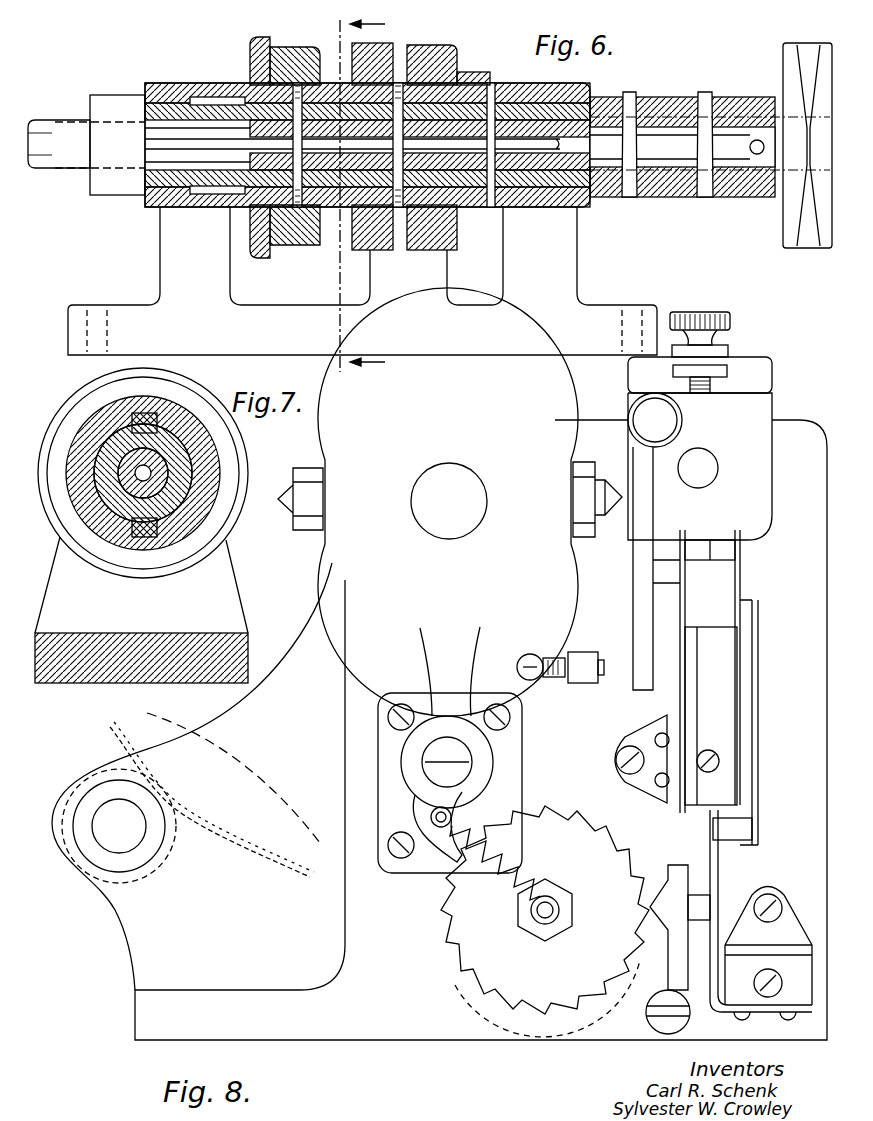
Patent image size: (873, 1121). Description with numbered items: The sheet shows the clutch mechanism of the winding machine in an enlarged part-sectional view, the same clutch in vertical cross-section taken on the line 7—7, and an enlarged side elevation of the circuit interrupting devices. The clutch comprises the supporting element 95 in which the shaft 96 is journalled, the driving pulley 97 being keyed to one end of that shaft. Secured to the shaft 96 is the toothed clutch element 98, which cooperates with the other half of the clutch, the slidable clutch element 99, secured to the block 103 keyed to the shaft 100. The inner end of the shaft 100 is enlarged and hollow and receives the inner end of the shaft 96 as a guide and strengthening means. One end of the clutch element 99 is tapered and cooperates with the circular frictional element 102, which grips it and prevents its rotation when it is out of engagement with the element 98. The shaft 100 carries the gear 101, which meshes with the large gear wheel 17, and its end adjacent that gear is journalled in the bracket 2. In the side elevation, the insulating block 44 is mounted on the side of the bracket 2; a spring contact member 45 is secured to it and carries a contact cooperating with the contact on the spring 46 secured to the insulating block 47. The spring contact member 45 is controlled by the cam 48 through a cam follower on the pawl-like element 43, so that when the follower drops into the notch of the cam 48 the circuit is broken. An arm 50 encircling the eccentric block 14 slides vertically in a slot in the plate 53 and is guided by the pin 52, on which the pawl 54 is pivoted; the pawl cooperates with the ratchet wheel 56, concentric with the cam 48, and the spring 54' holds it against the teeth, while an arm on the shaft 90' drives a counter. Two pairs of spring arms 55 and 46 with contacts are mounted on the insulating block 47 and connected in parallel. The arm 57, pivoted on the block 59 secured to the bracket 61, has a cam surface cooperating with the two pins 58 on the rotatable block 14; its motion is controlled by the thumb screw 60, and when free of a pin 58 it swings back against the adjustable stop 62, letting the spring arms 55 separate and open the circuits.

In FIG. 8, the bracket 2 is at (373, 1015).
In FIG. 6, the section line 7— 7 is at (348, 201).
In FIG. 8, the block 14 is at (448, 502).
In FIG. 8, the large gear wheel 17 is at (116, 733).
In FIG. 8, the pawl 43 is at (676, 974).
In FIG. 8, the insulating block 44 is at (809, 957).
In FIG. 8, the spring contact member 45 is at (716, 865).
In FIG. 8, the spring 46 is at (762, 781).
In FIG. 8, the insulating block 47 is at (728, 772).
In FIG. 8, the cam 48 is at (488, 999).
In FIG. 8, the arm 50 is at (462, 634).
In FIG. 8, the pin 52 is at (460, 773).
In FIG. 8, the plate 53 is at (387, 784).
In FIG. 8, the pawl 54 is at (432, 814).
In FIG. 8, the spring 54' is at (502, 863).
In FIG. 8, the spring arms 55 is at (743, 573).
In FIG. 8, the ratchet wheel 56 is at (484, 944).
In FIG. 8, the arm 57 is at (644, 511).
In FIG. 8, the pins 58 is at (295, 487).
In FIG. 8, the block 59 is at (700, 488).
In FIG. 8, the thumb screw 60 is at (733, 323).
In FIG. 8, the bracket 61 is at (773, 357).
In FIG. 8, the adjustable stop 62 is at (580, 660).
In FIG. 8, the shaft 90' is at (567, 910).
In FIG. 6, the supporting element 95 is at (512, 268).
In FIG. 7, the supporting element 95 is at (217, 633).
In FIG. 6, the shaft 96 is at (607, 100).
In FIG. 7, the shaft 96 is at (190, 489).
In FIG. 6, the driving pulley 97 is at (800, 77).
In FIG. 6, the toothed clutch element 98 is at (457, 58).
In FIG. 6, the clutch element 99 is at (389, 42).
In FIG. 7, the clutch element 99 is at (228, 512).
In FIG. 6, the shaft 100 is at (43, 117).
In FIG. 7, the shaft 100 is at (216, 447).
In FIG. 8, the gear 101 is at (180, 852).
In FIG. 6, the circular frictional element 102 is at (250, 48).
In FIG. 7, the circular frictional element 102 is at (198, 388).
In FIG. 6, the block 103 is at (337, 214).
In FIG. 7, the block 103 is at (142, 538).